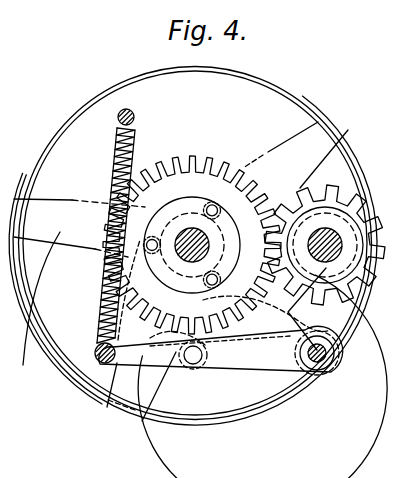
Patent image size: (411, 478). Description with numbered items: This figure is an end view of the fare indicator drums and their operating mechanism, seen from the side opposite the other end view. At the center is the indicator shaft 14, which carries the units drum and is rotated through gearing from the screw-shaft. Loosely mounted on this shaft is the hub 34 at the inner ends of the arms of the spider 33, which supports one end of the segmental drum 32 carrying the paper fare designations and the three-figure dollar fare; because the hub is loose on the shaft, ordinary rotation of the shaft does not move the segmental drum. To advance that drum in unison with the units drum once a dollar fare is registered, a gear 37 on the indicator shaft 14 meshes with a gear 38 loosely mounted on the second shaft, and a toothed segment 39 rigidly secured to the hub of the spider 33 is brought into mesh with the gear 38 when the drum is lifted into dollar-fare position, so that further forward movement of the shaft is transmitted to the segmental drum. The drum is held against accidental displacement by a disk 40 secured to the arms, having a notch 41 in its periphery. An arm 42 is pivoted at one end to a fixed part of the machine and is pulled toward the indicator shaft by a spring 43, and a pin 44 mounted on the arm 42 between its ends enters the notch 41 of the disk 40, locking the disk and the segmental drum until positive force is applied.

The shaft 14 is at (193, 228).
The segmental drum 32 is at (140, 420).
The spider 33 is at (118, 375).
The hub 34 is at (172, 205).
The gear 37 is at (258, 333).
The gear 38 is at (352, 153).
The toothed segment 39 is at (240, 165).
The disk 40 is at (338, 344).
The notch 41 is at (190, 366).
The arm 42 is at (266, 372).
The spring 43 is at (98, 316).
The pin 44 is at (197, 362).